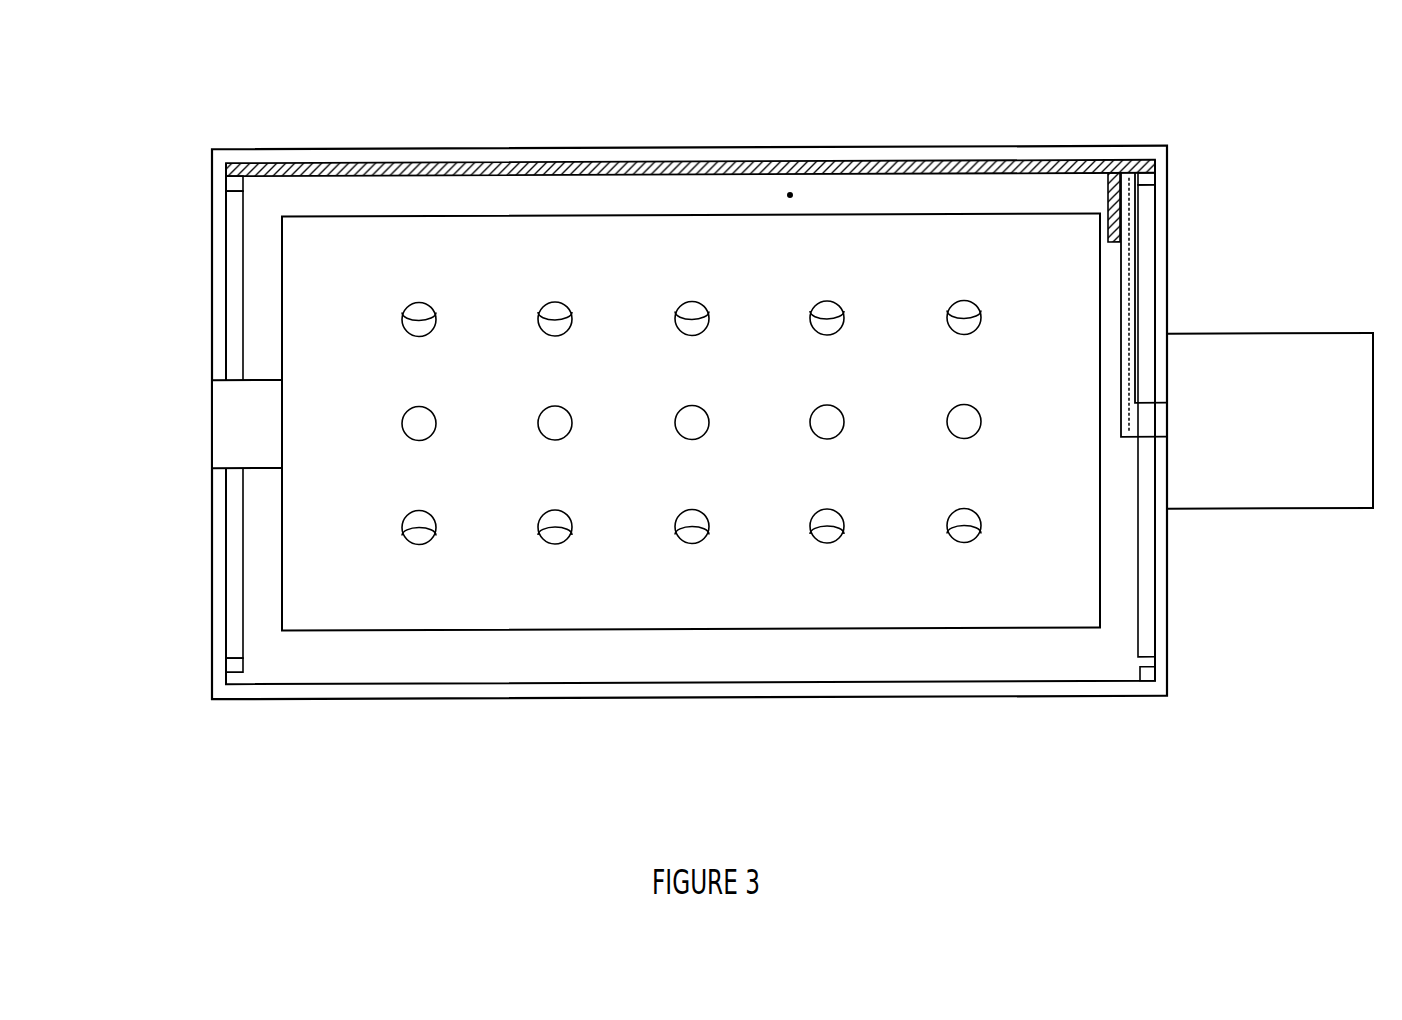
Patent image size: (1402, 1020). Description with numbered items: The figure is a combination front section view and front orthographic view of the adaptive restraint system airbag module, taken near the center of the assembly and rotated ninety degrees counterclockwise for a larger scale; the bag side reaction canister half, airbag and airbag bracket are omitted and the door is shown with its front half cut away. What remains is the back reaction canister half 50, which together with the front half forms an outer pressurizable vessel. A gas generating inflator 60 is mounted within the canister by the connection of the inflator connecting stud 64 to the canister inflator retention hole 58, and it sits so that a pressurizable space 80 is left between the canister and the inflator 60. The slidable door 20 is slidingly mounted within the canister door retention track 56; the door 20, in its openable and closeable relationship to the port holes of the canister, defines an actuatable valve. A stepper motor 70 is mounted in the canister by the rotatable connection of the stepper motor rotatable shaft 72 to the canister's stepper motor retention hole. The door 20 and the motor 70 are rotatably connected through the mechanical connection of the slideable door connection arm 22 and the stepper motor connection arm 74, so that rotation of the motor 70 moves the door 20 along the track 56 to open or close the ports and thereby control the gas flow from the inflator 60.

The slidable door 20 is at (408, 160).
The slideable door connection arm 22 is at (1103, 193).
The back reaction canister half 50 is at (405, 700).
The canister door retention track 56 is at (1138, 673).
The canister inflator retention hole 58 is at (215, 472).
The gas generating inflator 60 is at (710, 632).
The inflator connecting stud 64 is at (267, 380).
The stepper motor 70 is at (1237, 513).
The stepper motor rotatable shaft 72 is at (1145, 398).
The stepper motor connection arm 74 is at (1140, 272).
The pressurizable space 80 is at (790, 195).